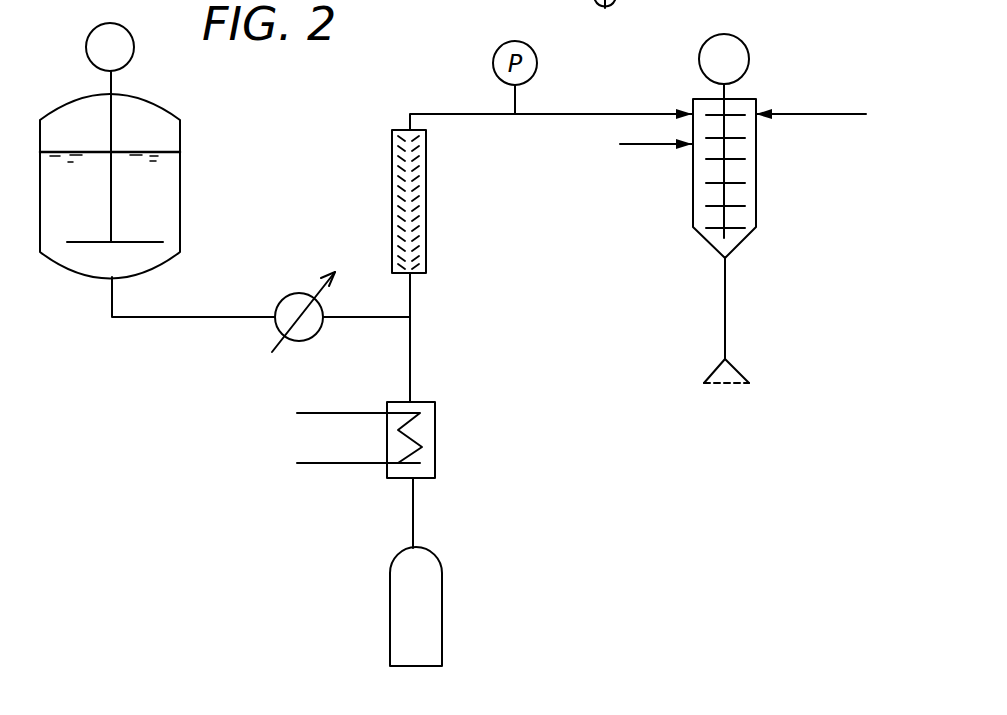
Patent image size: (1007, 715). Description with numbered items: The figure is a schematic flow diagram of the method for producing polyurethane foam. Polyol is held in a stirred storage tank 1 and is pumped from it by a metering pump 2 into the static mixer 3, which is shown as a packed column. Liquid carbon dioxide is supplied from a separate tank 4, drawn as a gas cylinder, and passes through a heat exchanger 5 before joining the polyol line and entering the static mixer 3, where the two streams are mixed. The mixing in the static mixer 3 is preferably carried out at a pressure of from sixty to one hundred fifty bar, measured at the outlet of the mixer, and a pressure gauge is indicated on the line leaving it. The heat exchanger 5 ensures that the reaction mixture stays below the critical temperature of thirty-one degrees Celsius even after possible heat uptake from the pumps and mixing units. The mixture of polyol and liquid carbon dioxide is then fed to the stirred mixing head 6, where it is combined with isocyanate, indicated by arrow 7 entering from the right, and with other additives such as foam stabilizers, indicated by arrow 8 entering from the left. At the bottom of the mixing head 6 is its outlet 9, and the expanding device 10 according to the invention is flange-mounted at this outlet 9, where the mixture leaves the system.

The storage tank 1 is at (170, 175).
The metering pump 2 is at (295, 336).
The static mixer 3 is at (415, 175).
The tank 4 is at (438, 582).
The heat exchanger 5 is at (432, 430).
The mixing head 6 is at (756, 187).
The arrow 7 is at (818, 114).
The arrow 8 is at (643, 147).
The outlet 9 is at (725, 277).
The expanding device 10 is at (733, 368).